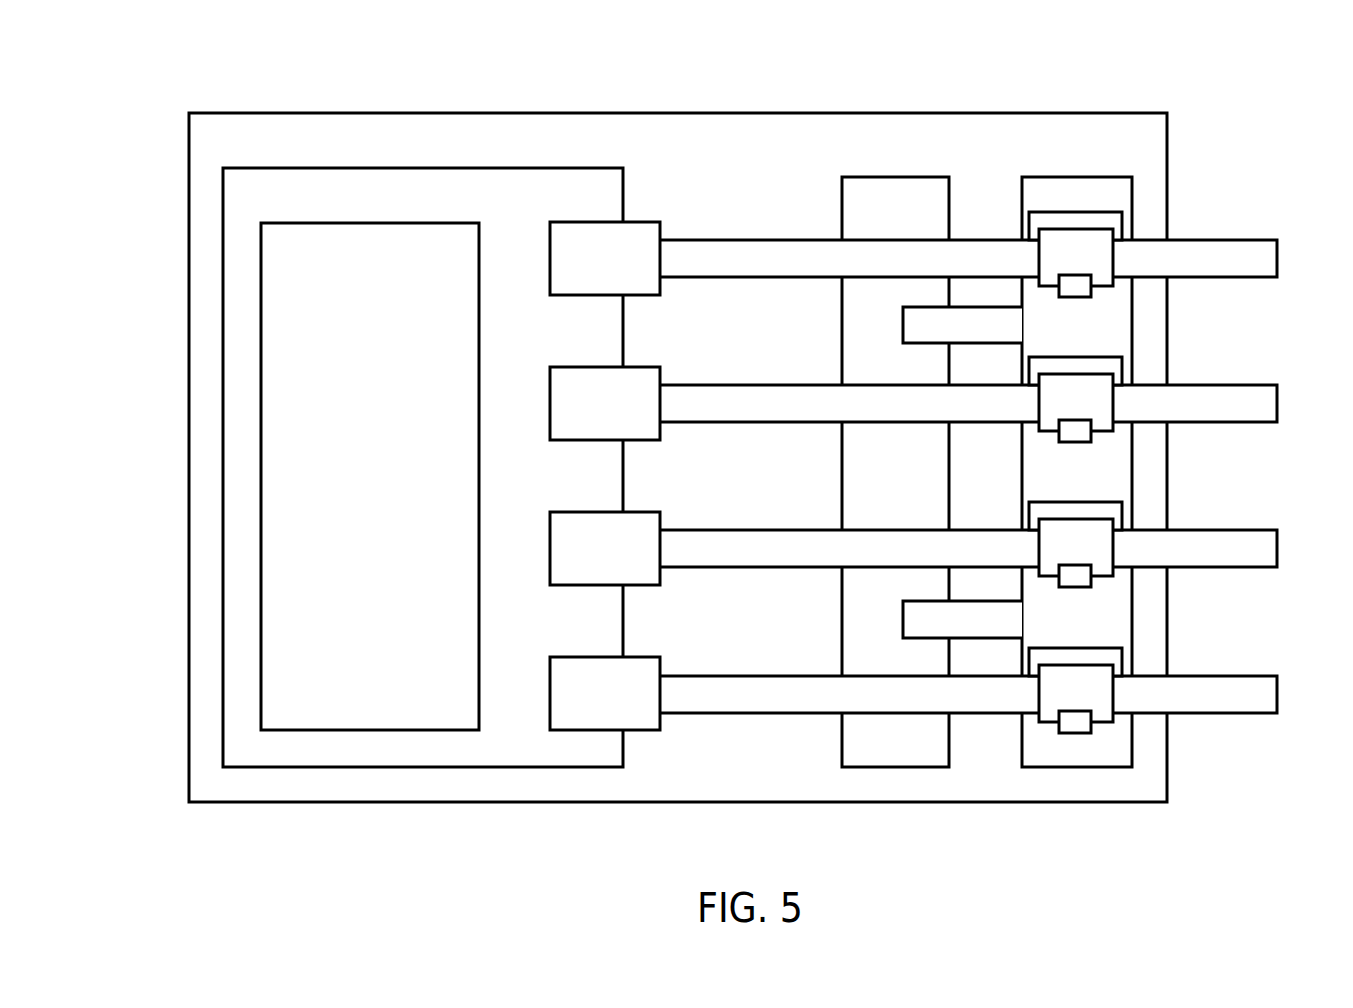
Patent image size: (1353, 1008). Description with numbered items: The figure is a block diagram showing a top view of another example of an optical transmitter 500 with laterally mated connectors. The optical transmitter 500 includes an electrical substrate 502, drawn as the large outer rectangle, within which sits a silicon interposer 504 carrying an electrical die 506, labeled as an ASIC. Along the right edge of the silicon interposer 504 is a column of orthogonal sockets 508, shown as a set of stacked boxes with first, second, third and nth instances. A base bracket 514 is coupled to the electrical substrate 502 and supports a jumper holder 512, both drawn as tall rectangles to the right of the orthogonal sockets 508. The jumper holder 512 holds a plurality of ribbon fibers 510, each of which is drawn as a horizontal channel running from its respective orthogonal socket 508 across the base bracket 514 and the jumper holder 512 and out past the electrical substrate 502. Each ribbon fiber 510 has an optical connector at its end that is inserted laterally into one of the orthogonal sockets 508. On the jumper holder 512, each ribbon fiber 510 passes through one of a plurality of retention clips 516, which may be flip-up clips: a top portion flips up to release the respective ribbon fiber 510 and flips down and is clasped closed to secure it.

The optical transmitter 500 is at (115, 32).
The electrical substrate 502 is at (695, 147).
The silicon interposer 504 is at (442, 201).
The electrical die 506 is at (387, 502).
The orthogonal sockets 508 is at (628, 717).
The ribbon fibers 510 is at (1248, 240).
The jumper holder 512 is at (1093, 202).
The base bracket 514 is at (913, 210).
The retention clips 516 is at (1075, 472).